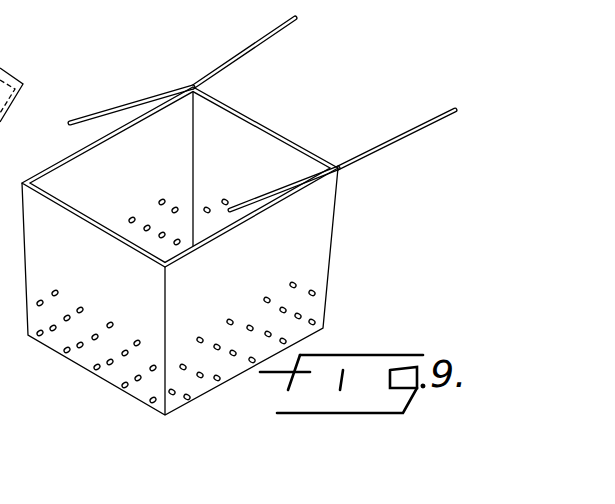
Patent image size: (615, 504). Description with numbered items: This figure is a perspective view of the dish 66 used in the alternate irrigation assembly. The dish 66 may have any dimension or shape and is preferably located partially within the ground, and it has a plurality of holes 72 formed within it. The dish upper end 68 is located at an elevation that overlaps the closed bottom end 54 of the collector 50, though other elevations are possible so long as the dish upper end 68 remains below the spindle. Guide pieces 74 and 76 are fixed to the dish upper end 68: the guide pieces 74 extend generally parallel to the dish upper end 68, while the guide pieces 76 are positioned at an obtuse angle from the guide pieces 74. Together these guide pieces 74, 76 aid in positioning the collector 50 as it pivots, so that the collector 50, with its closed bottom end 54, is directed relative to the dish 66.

The collector 50 is at (12, 20).
The closed bottom end 54 is at (0, 147).
The dish 66 is at (318, 237).
The dish upper end 68 is at (248, 132).
The holes 72 is at (314, 292).
The guide pieces 74 is at (250, 54).
The guide pieces 76 is at (141, 100).